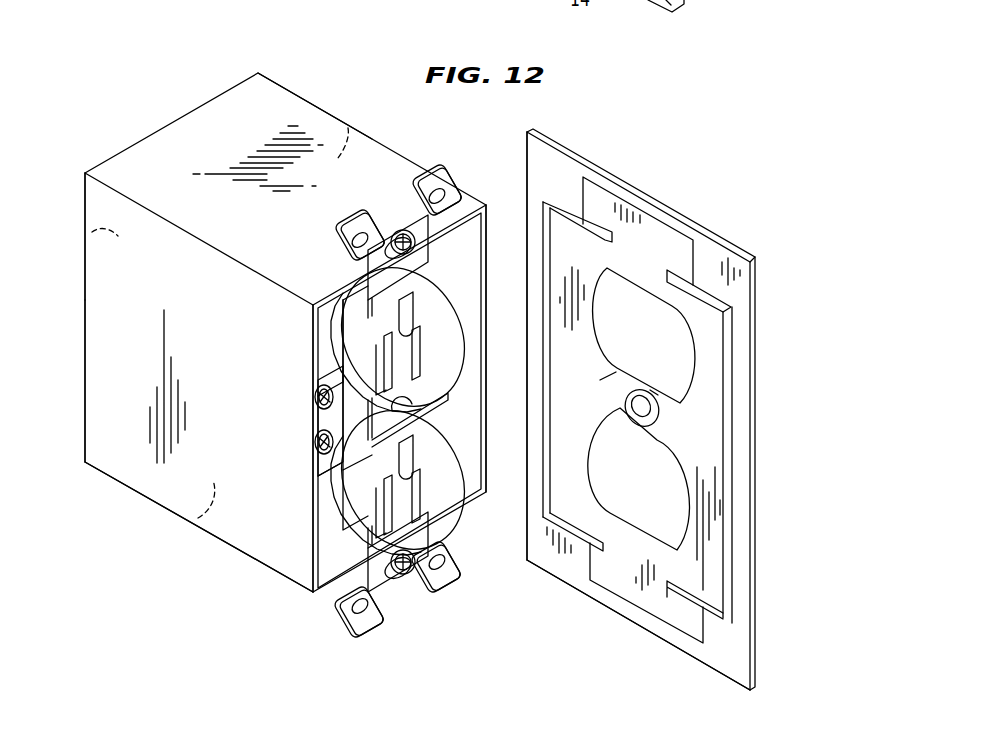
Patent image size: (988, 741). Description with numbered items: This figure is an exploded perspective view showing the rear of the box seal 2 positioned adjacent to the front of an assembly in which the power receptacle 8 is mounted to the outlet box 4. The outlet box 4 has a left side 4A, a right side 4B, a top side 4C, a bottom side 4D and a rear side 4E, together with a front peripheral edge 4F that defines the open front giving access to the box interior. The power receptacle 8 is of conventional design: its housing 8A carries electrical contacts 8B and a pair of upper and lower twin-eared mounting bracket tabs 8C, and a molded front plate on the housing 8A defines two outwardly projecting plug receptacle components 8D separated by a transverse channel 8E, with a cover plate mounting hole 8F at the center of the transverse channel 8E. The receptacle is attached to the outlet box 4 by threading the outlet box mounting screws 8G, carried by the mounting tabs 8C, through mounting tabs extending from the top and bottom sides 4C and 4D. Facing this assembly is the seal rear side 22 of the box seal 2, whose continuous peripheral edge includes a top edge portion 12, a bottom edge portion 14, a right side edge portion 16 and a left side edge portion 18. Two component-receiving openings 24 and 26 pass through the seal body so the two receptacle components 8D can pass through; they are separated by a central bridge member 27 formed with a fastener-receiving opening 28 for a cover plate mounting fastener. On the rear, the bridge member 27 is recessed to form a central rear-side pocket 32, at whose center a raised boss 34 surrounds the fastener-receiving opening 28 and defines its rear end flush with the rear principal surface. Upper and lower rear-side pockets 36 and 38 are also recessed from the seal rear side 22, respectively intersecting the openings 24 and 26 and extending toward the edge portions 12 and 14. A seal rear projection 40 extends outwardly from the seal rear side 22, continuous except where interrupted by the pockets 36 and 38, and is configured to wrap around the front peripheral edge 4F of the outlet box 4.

The box seal 2 is at (756, 234).
The outlet box 4 is at (206, 76).
The left side 4A is at (112, 310).
The right side 4B is at (348, 126).
The top side 4C is at (170, 148).
The bottom side 4D is at (198, 520).
The rear side 4E is at (92, 232).
The front peripheral edge 4F is at (488, 312).
The power receptacle 8 is at (332, 552).
The housing 8A is at (328, 480).
The electrical contacts 8B is at (313, 437).
The mounting bracket tabs 8C is at (368, 270).
The plug receptacle components 8D is at (453, 294).
The transverse channel 8E is at (432, 401).
The cover plate mounting hole 8F is at (430, 396).
The outlet box mounting screws 8G is at (410, 228).
The top edge portion 12 is at (615, 177).
The bottom edge portion 14 is at (690, 657).
The right side edge portion 16 is at (526, 157).
The left side edge portion 18 is at (753, 453).
The seal rear side 22 is at (745, 287).
The component-receiving opening 24 is at (598, 284).
The component-receiving opening 26 is at (597, 490).
The central bridge member 27 is at (653, 386).
The fastener-receiving opening 28 is at (638, 411).
The central rear-side pocket 32 is at (602, 373).
The raised boss 34 is at (655, 430).
The upper rear-side pocket 36 is at (668, 243).
The lower rear-side pocket 38 is at (620, 575).
The seal rear projection 40 is at (730, 537).